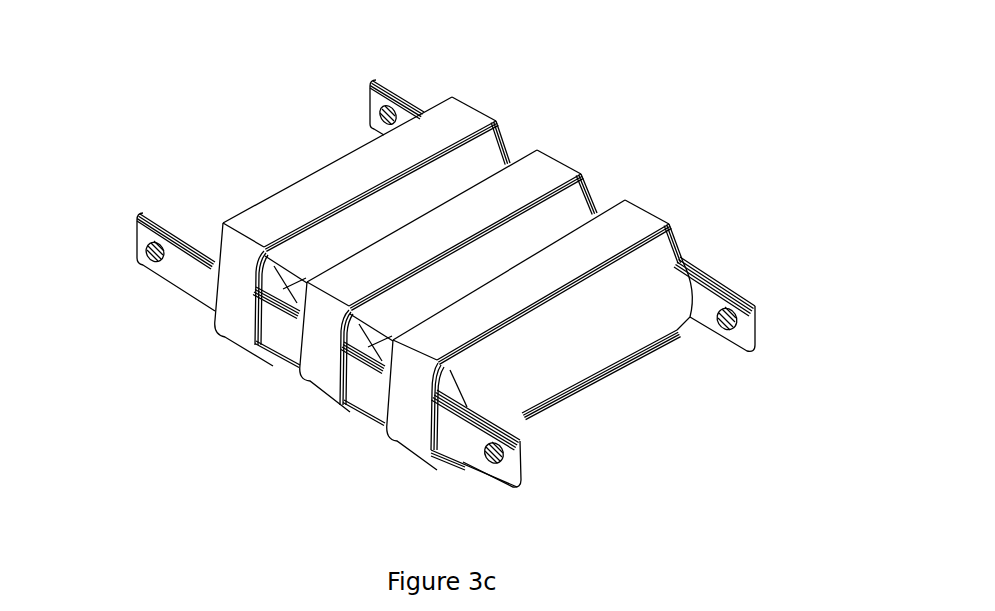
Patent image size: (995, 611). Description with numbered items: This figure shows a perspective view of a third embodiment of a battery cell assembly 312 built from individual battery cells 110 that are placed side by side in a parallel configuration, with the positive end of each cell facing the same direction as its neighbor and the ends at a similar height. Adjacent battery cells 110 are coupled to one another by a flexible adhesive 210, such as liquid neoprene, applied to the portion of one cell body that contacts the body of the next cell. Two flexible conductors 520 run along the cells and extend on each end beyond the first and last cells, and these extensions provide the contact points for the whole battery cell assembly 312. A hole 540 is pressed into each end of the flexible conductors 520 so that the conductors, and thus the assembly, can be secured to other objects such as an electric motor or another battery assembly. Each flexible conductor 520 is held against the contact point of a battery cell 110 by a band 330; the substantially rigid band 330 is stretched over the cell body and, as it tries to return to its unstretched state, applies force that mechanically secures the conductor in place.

The battery cell 110 is at (363, 227).
The flexible adhesive 210 is at (297, 290).
The battery cell assembly 312 is at (702, 497).
The band 330 is at (237, 323).
The flexible conductor 520 is at (188, 263).
The hole 540 is at (145, 263).